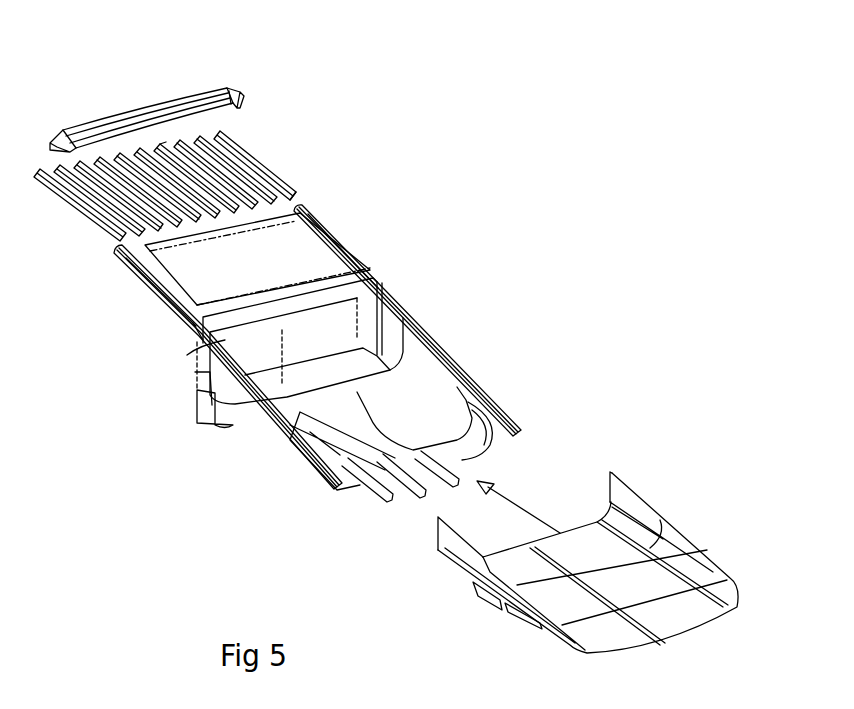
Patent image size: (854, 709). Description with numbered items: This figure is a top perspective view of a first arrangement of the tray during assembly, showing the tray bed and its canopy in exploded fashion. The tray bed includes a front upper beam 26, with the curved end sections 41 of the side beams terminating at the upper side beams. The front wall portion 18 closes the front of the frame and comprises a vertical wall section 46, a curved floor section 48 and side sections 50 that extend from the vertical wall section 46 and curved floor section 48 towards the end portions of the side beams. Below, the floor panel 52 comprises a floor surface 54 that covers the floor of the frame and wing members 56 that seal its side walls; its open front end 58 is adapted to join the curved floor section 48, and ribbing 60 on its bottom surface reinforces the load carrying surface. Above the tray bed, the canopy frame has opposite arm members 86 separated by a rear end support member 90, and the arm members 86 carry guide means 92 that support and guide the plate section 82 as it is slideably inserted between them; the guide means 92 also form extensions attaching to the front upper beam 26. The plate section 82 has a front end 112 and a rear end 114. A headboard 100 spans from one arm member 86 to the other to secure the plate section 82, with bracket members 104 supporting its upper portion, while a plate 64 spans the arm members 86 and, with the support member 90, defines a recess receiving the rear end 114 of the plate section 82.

The front wall portion 18 is at (300, 393).
The front upper beam 26 is at (310, 300).
The end sections 41 is at (200, 398).
The vertical wall section 46 is at (187, 355).
The curved floor section 48 is at (343, 368).
The side sections 50 is at (367, 332).
The floor panel 52 is at (590, 632).
The floor surface 54 is at (677, 612).
The wing members 56 is at (642, 518).
The open front end 58 is at (578, 512).
The ribbing 60 is at (487, 597).
The plate 64 is at (282, 280).
The plate section 82 is at (93, 197).
The arm members 86 is at (336, 232).
The end support member 90 is at (193, 323).
The guide means 92 is at (319, 228).
The headboard 100 is at (117, 113).
The bracket members 104 is at (238, 97).
The front end 112 is at (166, 138).
The rear end 114 is at (248, 183).